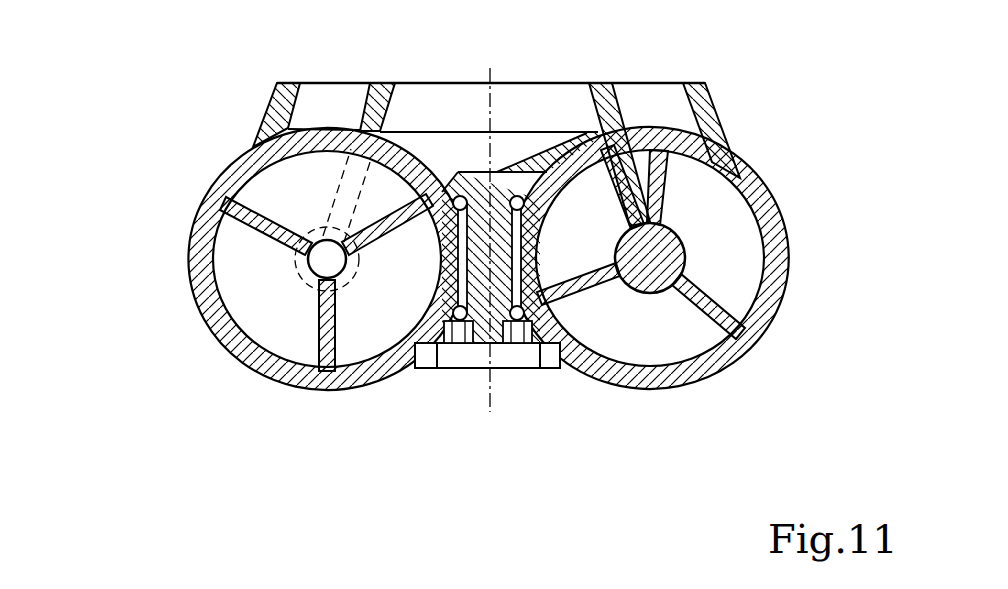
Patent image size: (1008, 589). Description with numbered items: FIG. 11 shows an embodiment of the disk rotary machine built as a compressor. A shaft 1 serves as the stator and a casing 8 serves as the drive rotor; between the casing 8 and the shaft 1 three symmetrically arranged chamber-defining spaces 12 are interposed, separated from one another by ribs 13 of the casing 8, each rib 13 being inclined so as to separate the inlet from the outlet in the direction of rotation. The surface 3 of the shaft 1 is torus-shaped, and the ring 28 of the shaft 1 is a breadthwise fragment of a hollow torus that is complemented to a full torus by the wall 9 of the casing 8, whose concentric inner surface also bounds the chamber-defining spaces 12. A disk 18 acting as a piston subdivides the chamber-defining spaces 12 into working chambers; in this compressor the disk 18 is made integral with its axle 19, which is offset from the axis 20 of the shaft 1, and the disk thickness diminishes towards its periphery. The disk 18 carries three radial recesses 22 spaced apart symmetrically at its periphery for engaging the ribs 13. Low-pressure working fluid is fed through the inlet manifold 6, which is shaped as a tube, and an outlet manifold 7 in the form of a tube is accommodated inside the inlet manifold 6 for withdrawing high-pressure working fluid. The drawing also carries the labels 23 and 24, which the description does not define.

The shaft 1 is at (617, 118).
The surface 3 is at (675, 350).
The working fluid inlet manifold 6 is at (673, 55).
The working fluid outlet manifold 7 is at (529, 62).
The casing 8 is at (640, 410).
The wall 9 is at (473, 280).
The chamber-defining spaces 12 is at (587, 230).
The ribs 13 is at (620, 389).
The disk 18 is at (143, 136).
The axle 19 is at (360, 353).
The axis 20 is at (511, 337).
The radial recesses 22 is at (307, 327).
The inlet chamber 23 is at (396, 79).
The vane 24 is at (733, 117).
The ring 28 is at (315, 125).